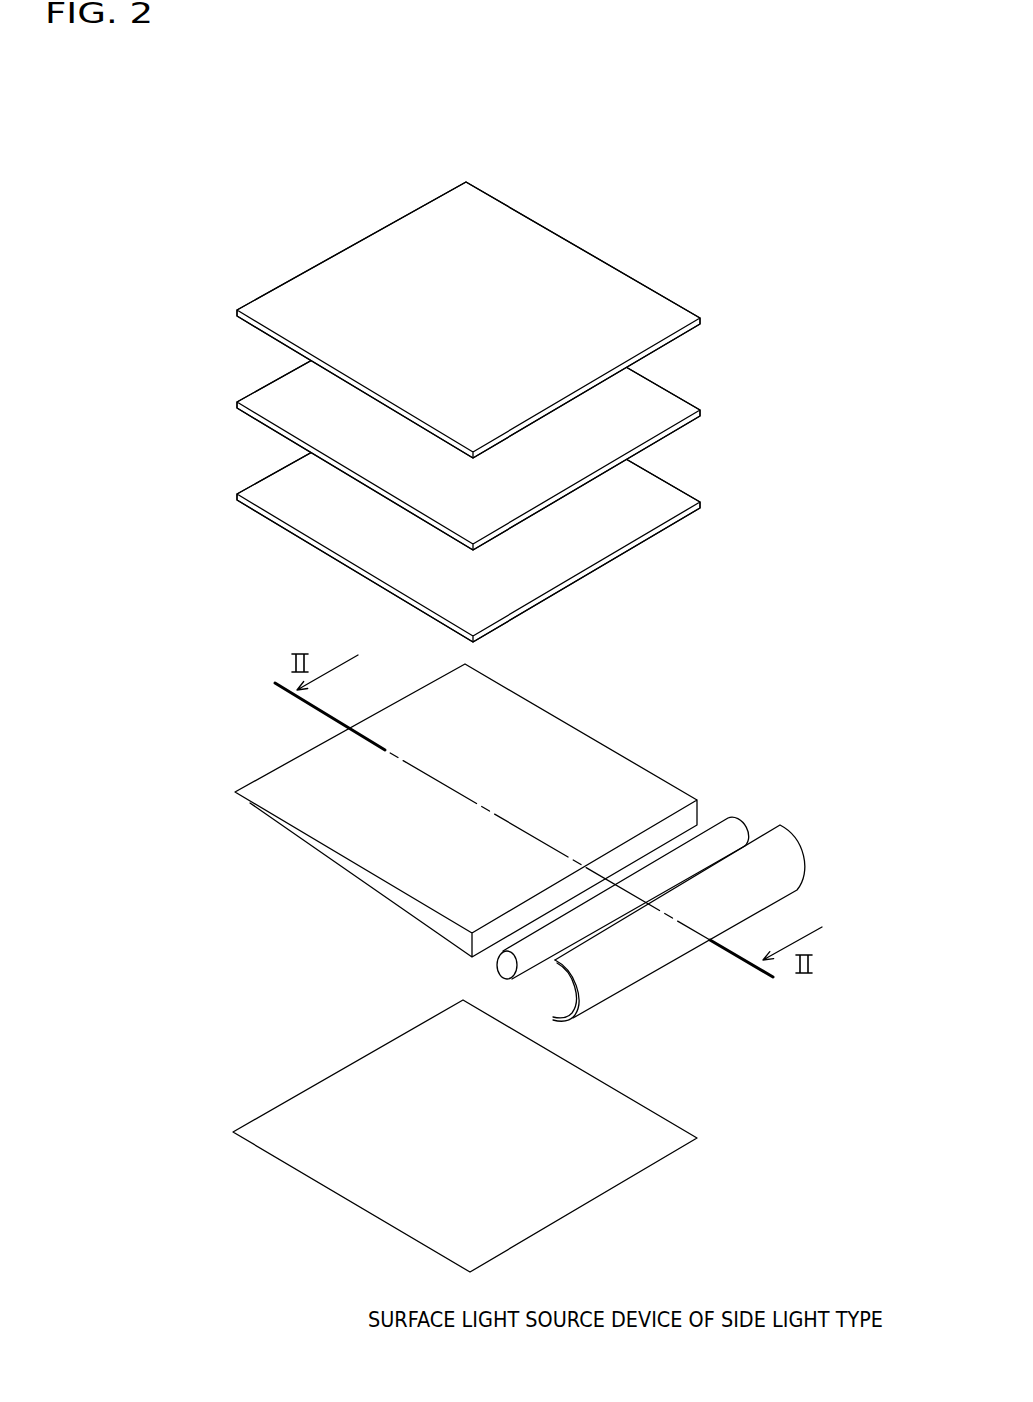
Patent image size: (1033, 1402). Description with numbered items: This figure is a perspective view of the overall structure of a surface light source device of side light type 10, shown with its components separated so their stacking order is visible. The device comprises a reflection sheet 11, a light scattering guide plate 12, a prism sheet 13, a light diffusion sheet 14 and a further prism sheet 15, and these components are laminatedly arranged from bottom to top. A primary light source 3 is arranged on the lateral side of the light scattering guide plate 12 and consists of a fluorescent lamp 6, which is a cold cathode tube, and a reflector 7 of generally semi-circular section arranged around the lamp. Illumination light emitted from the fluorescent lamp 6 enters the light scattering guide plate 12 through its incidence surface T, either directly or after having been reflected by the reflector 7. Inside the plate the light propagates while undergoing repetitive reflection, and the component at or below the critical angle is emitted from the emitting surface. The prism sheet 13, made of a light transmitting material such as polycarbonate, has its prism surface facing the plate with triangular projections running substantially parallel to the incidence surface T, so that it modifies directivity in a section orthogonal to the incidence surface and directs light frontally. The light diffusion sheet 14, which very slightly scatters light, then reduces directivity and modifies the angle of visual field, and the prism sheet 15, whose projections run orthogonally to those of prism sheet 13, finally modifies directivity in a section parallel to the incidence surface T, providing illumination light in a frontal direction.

The surface light source device of side light type 10 is at (520, 758).
The reflection sheet 11 is at (512, 1242).
The light scattering guide plate 12 is at (273, 790).
The prism sheet 13 is at (583, 557).
The light diffusion sheet 14 is at (583, 465).
The prism sheet 15 is at (583, 370).
The primary light source 3 is at (591, 866).
The fluorescent lamp 6 is at (535, 953).
The reflector 7 is at (677, 945).
The incidence surface T is at (513, 920).